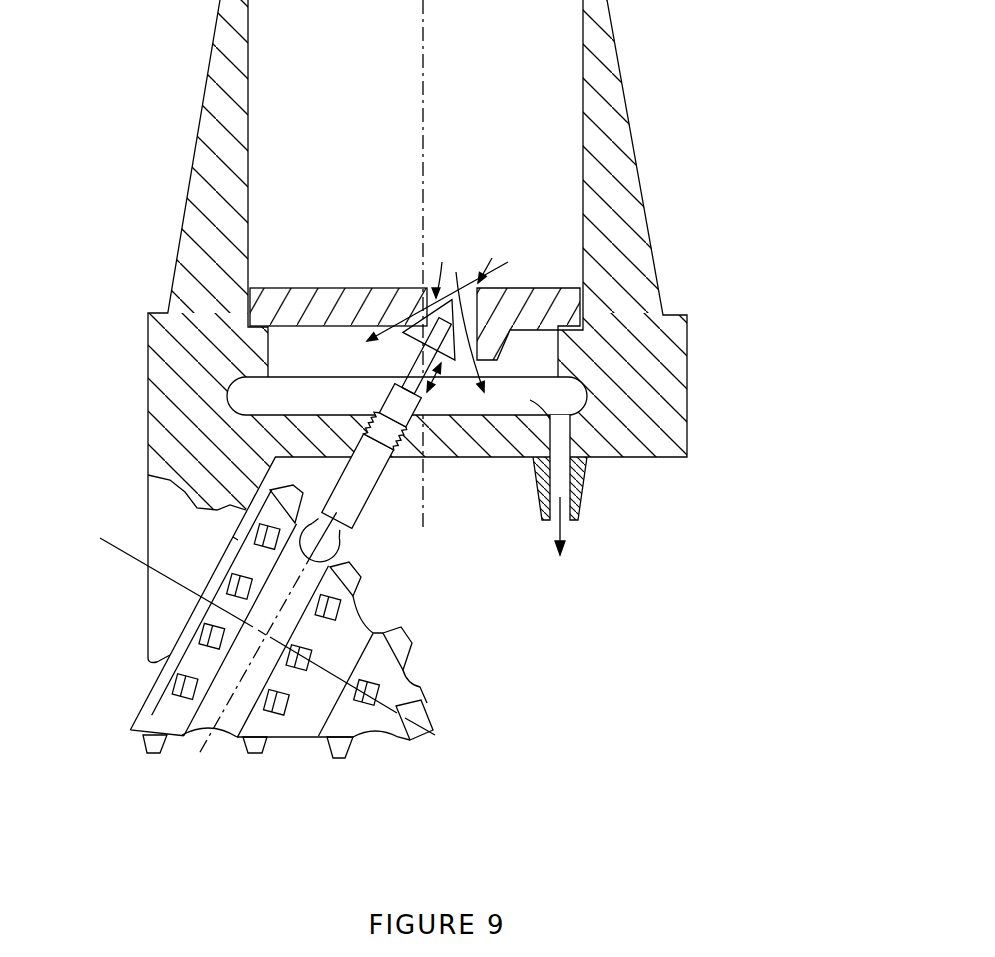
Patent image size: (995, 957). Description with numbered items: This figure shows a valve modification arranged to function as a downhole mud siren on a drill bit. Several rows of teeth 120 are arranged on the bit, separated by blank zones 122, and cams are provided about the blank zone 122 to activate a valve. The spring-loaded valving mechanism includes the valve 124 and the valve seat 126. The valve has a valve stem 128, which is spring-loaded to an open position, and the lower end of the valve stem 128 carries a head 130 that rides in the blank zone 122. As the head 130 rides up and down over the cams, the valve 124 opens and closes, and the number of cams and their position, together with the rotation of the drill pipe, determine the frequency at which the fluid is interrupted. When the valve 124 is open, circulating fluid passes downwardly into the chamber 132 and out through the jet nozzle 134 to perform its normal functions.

The rows of teeth 120 is at (143, 750).
The blank zone 122 is at (219, 727).
The valve 124 is at (437, 297).
The valve seat 126 is at (452, 313).
The valve stem 128 is at (408, 372).
The head 130 is at (333, 548).
The chamber 132 is at (560, 387).
The jet nozzle 134 is at (582, 507).